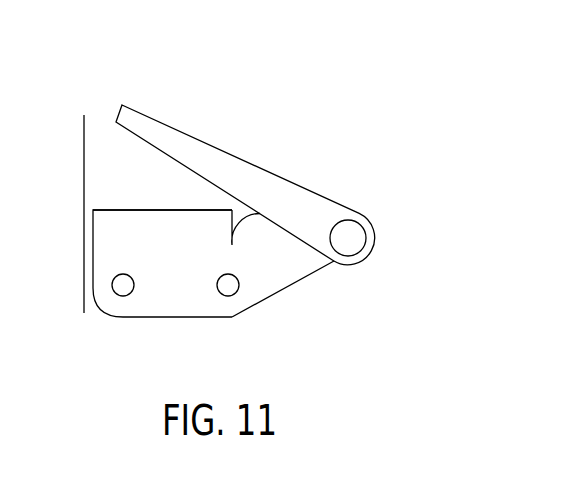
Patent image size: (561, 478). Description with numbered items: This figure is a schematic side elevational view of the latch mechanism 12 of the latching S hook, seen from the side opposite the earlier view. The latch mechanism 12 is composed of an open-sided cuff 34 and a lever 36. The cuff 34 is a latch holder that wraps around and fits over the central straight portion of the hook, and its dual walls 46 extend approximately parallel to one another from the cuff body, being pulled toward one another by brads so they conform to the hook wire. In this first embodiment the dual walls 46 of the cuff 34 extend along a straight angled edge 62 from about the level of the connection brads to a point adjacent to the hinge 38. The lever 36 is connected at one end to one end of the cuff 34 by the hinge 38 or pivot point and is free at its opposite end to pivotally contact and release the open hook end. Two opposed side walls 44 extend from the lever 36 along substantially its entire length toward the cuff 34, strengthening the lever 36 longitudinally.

The latch mechanism 12 is at (108, 61).
The cuff 34 is at (287, 268).
The lever 36 is at (258, 177).
The hinge 38 is at (376, 229).
The side walls 44 is at (324, 230).
The dual walls 46 is at (162, 218).
The angled edge 62 is at (270, 298).